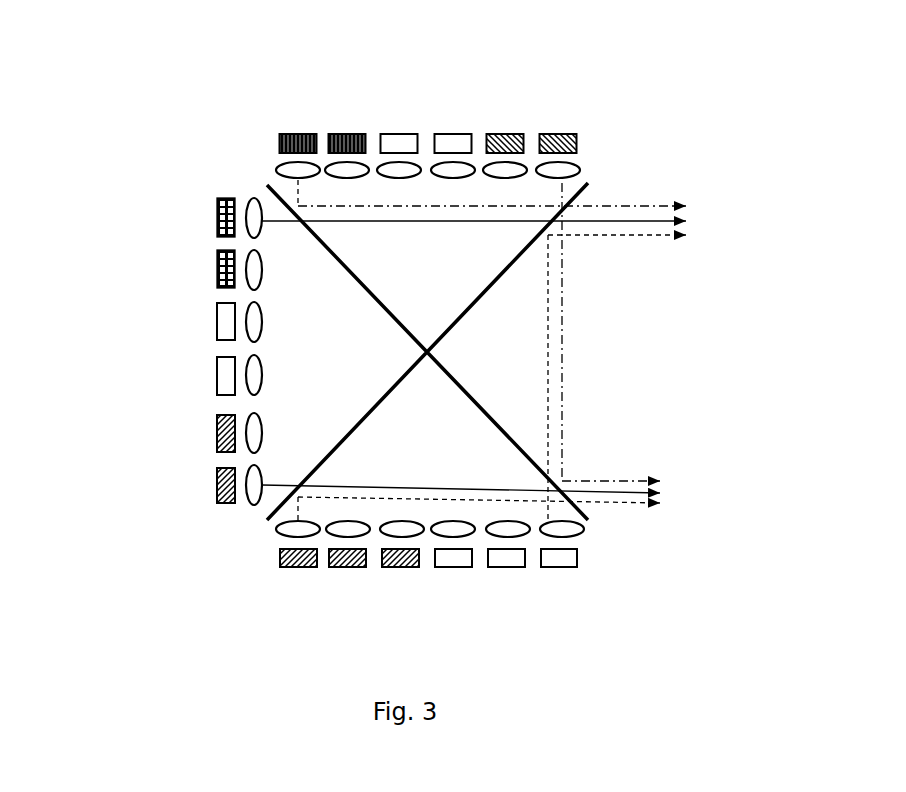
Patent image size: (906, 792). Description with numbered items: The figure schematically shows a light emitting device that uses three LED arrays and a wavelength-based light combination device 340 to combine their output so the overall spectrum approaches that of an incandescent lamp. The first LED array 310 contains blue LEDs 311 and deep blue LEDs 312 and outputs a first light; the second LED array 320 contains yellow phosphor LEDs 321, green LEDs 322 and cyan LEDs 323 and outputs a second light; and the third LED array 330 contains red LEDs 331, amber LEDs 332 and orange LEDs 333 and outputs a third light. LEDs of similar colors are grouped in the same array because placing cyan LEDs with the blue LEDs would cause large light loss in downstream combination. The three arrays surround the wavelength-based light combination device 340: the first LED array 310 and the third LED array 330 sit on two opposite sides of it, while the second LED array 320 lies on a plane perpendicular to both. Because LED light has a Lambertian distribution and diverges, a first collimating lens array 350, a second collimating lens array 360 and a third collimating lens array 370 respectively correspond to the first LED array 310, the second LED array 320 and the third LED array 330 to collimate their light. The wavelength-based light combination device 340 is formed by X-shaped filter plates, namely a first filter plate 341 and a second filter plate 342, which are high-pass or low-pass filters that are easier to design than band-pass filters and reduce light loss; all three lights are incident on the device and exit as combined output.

The first LED array 310 is at (325, 624).
The blue LEDs 311 is at (280, 575).
The deep blue LEDs 312 is at (435, 575).
The second LED array 320 is at (120, 223).
The yellow phosphor LEDs 321 is at (205, 200).
The green LEDs 322 is at (205, 303).
The cyan LEDs 323 is at (205, 415).
The third LED array 330 is at (292, 70).
The red LEDs 331 is at (368, 128).
The amber LEDs 332 is at (378, 128).
The orange LEDs 333 is at (578, 128).
The wavelength-based light combination device 340 is at (714, 297).
The first filter plate 341 is at (580, 190).
The second filter plate 342 is at (538, 465).
The first collimating lens array 350 is at (580, 530).
The second collimating lens array 360 is at (258, 495).
The third collimating lens array 370 is at (580, 165).